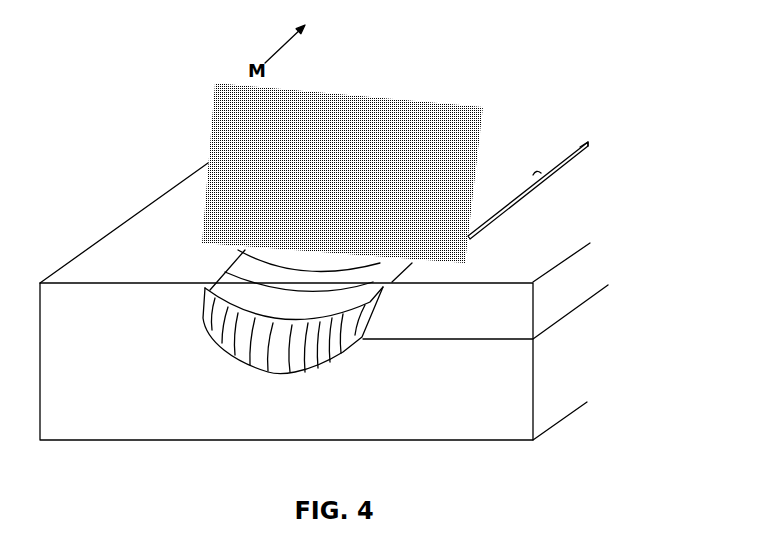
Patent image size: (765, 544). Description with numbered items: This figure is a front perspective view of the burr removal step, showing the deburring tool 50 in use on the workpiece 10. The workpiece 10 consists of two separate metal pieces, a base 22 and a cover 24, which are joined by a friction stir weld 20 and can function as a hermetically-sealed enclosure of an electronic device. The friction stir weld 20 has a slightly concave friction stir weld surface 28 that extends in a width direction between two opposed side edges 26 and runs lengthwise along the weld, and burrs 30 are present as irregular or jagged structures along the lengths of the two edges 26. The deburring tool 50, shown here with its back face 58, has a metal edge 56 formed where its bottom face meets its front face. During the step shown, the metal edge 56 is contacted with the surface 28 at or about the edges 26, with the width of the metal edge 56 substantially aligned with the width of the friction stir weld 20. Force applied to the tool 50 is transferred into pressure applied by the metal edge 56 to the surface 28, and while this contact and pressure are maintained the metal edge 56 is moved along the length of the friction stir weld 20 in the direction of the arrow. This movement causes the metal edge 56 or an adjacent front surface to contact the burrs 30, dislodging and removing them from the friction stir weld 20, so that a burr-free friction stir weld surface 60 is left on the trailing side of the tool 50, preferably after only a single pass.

The workpiece 10 is at (668, 192).
The friction stir weld 20 is at (333, 343).
The base 22 is at (550, 382).
The cover 24 is at (577, 270).
The side edges 26 is at (565, 155).
The friction stir weld surface 28 is at (228, 280).
The burrs 30 is at (567, 150).
The deburring tool 50 is at (314, 158).
The metal edge 56 is at (465, 260).
The back face 58 is at (400, 120).
The burr-free friction stir weld surface 60 is at (200, 267).